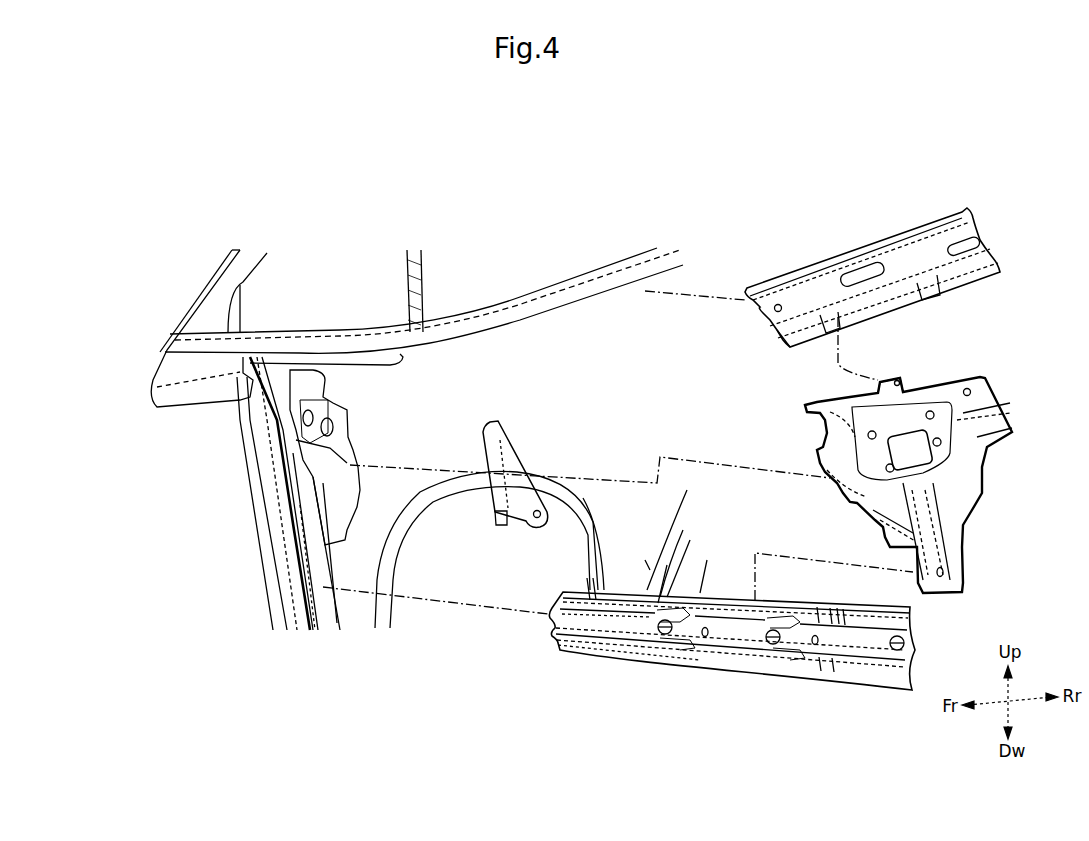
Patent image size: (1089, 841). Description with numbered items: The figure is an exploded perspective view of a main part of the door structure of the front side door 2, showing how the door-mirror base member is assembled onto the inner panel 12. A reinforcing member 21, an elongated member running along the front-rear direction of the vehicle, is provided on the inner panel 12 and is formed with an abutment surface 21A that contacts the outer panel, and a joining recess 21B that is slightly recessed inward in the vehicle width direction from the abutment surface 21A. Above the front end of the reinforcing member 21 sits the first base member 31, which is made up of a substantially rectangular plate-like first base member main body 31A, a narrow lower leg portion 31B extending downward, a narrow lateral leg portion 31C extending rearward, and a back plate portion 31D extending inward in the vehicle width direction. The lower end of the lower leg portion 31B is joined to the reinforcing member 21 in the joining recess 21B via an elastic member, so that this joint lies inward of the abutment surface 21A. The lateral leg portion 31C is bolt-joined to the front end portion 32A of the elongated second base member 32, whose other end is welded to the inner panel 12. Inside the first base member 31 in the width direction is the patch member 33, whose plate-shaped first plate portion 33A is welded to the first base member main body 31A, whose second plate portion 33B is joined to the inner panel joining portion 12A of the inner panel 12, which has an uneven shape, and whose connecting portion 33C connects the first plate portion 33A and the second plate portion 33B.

The front side door 2 is at (718, 216).
The inner panel 12 is at (458, 357).
The inner panel joining portion 12A is at (313, 460).
The reinforcing member 21 is at (777, 658).
The abutment surface 21A is at (868, 620).
The joining recess 21B is at (695, 592).
The first base member 31 is at (988, 502).
The first base member main body 31A is at (910, 410).
The lower leg portion 31B is at (960, 577).
The lateral leg portion 31C is at (992, 417).
The back plate portion 31D is at (830, 395).
The second base member 32 is at (892, 236).
The front end portion 32A is at (783, 320).
The patch member 33 is at (523, 452).
The first plate portion 33A is at (526, 500).
The second plate portion 33B is at (494, 518).
The connecting portion 33C is at (513, 505).